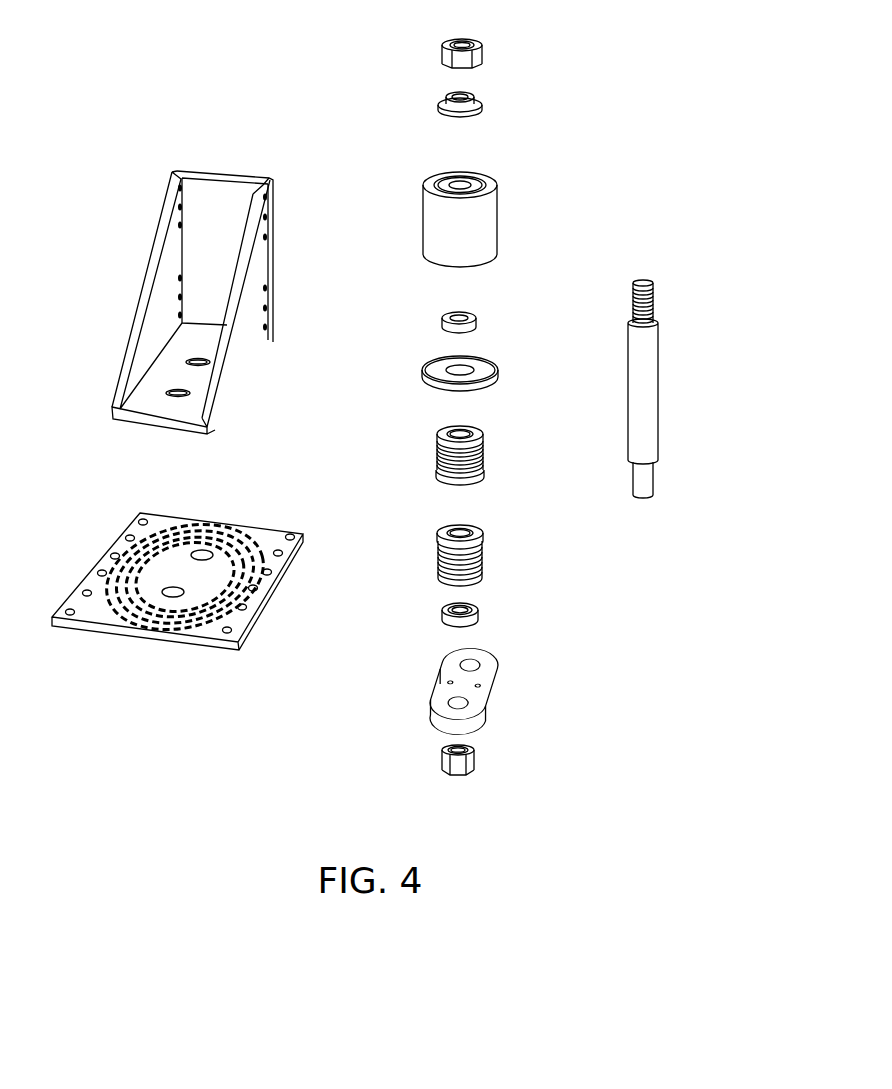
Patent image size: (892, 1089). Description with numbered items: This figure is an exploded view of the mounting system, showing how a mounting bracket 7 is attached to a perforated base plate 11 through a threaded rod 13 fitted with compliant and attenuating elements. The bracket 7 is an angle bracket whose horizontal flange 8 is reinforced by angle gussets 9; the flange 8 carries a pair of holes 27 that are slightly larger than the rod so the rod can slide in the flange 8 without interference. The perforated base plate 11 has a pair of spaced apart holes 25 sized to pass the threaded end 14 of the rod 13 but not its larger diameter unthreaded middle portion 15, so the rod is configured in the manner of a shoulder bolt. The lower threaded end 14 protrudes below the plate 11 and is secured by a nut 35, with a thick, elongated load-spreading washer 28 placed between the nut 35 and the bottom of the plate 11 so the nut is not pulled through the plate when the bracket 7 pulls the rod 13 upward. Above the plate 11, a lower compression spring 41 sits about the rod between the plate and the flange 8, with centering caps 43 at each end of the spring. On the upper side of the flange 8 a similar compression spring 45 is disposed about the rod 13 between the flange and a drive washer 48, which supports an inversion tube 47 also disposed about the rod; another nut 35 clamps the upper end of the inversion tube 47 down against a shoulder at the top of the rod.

The mounting bracket 7 is at (291, 148).
The horizontal flange 8 is at (155, 403).
The angle gussets 9 is at (253, 302).
The holes 27 is at (165, 387).
The perforated base plate 11 is at (93, 568).
The holes 25 is at (170, 586).
The nut 35 is at (443, 54).
The inversion tube 47 is at (490, 227).
The drive washer 48 is at (432, 372).
The compression spring 45 is at (442, 457).
The centering caps 43 is at (447, 476).
The lower compression spring 41 is at (485, 560).
The load-spreading washer 28 is at (492, 692).
The threaded rod 13 is at (672, 389).
The threaded end 14 is at (653, 297).
The unthreaded middle portion 15 is at (635, 385).